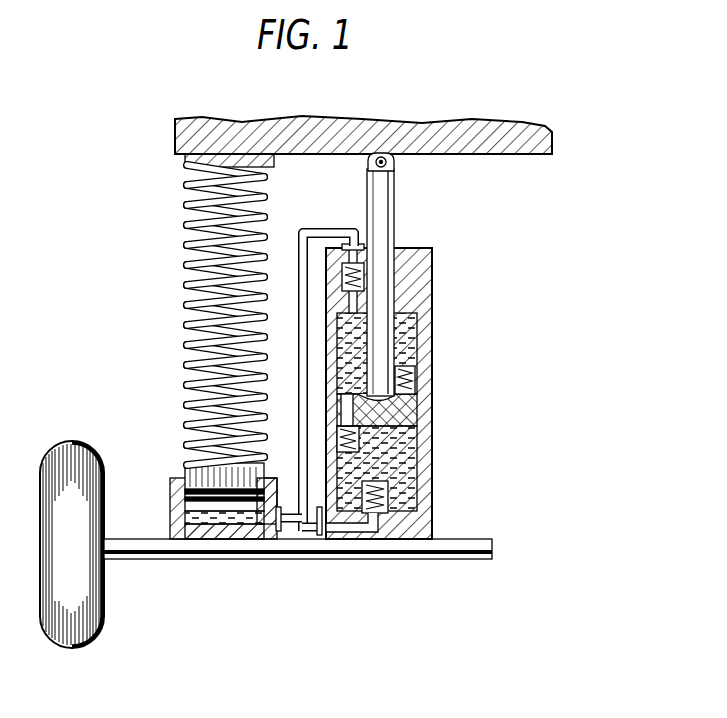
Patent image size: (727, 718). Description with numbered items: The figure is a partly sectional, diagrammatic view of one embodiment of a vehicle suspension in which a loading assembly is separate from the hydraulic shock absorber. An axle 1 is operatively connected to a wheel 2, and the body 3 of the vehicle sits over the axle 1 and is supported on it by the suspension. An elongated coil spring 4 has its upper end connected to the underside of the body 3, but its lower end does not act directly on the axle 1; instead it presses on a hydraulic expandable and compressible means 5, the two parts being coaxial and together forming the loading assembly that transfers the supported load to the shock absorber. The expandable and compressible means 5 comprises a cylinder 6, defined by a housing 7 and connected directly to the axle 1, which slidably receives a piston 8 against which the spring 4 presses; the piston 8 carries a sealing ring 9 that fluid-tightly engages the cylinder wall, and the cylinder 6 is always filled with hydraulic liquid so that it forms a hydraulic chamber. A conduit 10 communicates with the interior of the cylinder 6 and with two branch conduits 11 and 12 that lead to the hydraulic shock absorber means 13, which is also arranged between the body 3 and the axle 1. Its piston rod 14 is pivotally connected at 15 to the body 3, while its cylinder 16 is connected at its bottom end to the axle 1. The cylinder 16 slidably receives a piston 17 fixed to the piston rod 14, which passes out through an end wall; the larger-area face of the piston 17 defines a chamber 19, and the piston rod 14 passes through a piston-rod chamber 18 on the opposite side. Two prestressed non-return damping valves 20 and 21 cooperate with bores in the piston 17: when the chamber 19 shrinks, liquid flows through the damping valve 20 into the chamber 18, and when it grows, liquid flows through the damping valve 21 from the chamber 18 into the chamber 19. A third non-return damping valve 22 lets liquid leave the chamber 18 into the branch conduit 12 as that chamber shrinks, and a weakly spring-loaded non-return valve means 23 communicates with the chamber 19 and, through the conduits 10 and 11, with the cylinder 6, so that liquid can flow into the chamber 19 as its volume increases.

The axle 1 is at (151, 550).
The wheel 2 is at (45, 580).
The body 3 is at (501, 150).
The coil spring 4 is at (186, 290).
The expandable and compressible means 5 is at (166, 490).
The cylinder 6 is at (222, 524).
The housing 7 is at (172, 518).
The piston 8 is at (188, 470).
The sealing ring 9 is at (262, 498).
The conduit 10 is at (291, 524).
The branch conduit 11 is at (319, 534).
The branch conduit 12 is at (298, 372).
The shock absorber means 13 is at (433, 428).
The piston rod 14 is at (393, 221).
The pivotal connection 15 is at (366, 163).
The cylinder 16 is at (410, 468).
The piston 17 is at (430, 402).
The piston-rod chamber 18 is at (416, 321).
The chamber 19 is at (390, 496).
The damping valve 20 is at (411, 384).
The damping valve 21 is at (340, 432).
The damping valve 22 is at (340, 279).
The non-return valve means 23 is at (372, 536).